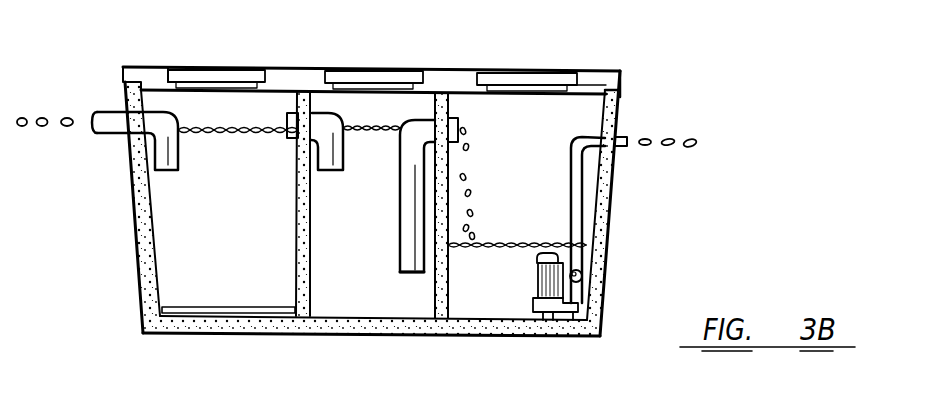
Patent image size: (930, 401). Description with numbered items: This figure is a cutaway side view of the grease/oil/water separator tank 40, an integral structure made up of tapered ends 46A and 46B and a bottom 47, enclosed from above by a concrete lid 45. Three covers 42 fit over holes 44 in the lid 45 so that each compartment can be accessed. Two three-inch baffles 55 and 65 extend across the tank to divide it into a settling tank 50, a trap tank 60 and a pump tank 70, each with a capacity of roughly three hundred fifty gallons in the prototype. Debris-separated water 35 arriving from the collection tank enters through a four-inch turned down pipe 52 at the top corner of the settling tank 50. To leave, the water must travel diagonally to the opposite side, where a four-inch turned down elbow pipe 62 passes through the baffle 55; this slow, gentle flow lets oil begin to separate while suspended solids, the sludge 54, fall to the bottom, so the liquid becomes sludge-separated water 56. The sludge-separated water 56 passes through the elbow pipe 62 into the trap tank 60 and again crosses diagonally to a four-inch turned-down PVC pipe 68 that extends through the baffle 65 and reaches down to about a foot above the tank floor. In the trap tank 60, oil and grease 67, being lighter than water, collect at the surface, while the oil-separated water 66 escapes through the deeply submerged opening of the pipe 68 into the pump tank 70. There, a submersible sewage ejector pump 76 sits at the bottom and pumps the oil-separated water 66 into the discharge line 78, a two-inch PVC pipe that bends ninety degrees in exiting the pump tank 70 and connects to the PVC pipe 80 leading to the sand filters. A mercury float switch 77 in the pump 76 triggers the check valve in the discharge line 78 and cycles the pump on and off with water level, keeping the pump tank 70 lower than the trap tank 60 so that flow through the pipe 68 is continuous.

The debris-separated water 35 is at (67, 117).
The grease/oil/water separator tank 40 is at (368, 210).
The covers 42 is at (383, 77).
The holes 44 is at (237, 87).
The concrete lid 45 is at (595, 88).
The tapered end 46A is at (140, 281).
The tapered end 46B is at (602, 304).
The bottom 47 is at (570, 336).
The settling tank 50 is at (193, 113).
The turned down pipe 52 is at (180, 150).
The sludge 54 is at (187, 308).
The baffle 55 is at (300, 252).
The sludge-separated water 56 is at (243, 224).
The trap tank 60 is at (390, 113).
The turned down elbow pipe 62 is at (347, 155).
The baffle 65 is at (435, 294).
The oil-separated water 66 is at (344, 224).
The oil and grease 67 is at (357, 125).
The turned-down PVC pipe 68 is at (403, 263).
The pump tank 70 is at (533, 137).
The submersible sewage ejector pump 76 is at (538, 281).
The mercury float switch 77 is at (583, 276).
The discharge line 78 is at (583, 209).
The PVC pipe 80 is at (625, 137).